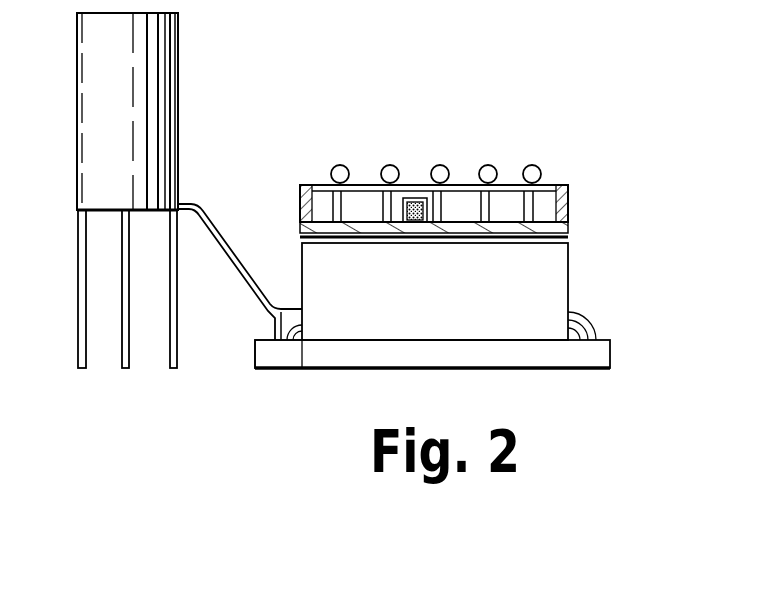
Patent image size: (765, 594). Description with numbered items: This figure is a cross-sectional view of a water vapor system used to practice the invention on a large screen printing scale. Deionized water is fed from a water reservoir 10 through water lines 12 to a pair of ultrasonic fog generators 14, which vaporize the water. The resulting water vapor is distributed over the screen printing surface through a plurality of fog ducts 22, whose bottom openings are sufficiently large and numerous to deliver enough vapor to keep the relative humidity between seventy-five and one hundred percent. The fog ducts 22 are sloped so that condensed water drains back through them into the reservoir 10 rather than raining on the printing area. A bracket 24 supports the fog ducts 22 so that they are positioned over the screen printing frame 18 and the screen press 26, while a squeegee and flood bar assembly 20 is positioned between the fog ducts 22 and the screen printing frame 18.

The water reservoir 10 is at (152, 63).
The water lines 12 is at (231, 249).
The ultrasonic fog generators 14 is at (283, 355).
The screen printing frame 18 is at (582, 232).
The squeegee and flood bar assembly 20 is at (416, 196).
The fog ducts 22 is at (490, 170).
The bracket 24 is at (568, 204).
The screen press 26 is at (512, 358).